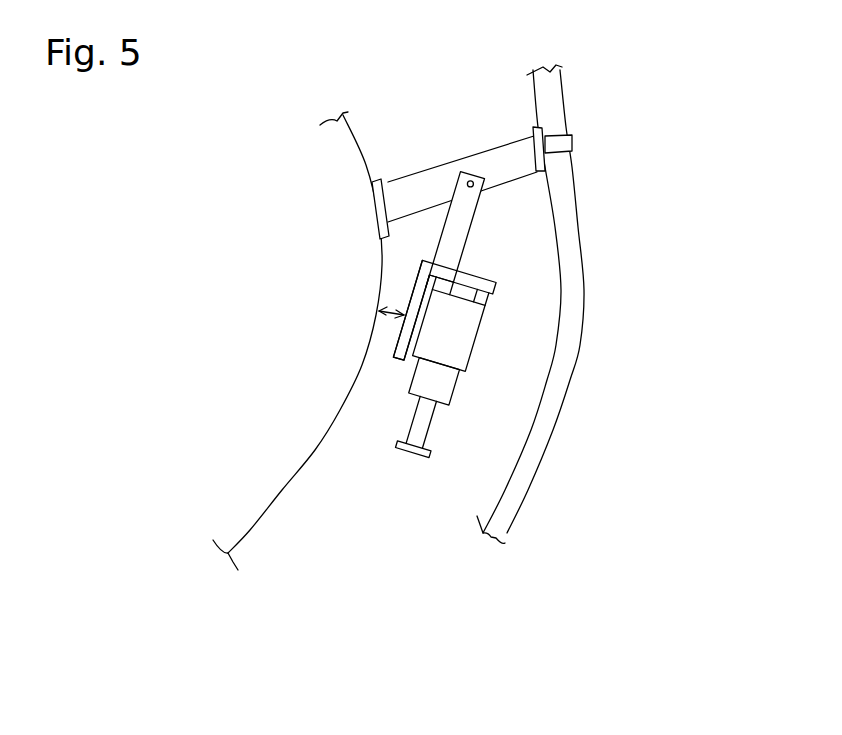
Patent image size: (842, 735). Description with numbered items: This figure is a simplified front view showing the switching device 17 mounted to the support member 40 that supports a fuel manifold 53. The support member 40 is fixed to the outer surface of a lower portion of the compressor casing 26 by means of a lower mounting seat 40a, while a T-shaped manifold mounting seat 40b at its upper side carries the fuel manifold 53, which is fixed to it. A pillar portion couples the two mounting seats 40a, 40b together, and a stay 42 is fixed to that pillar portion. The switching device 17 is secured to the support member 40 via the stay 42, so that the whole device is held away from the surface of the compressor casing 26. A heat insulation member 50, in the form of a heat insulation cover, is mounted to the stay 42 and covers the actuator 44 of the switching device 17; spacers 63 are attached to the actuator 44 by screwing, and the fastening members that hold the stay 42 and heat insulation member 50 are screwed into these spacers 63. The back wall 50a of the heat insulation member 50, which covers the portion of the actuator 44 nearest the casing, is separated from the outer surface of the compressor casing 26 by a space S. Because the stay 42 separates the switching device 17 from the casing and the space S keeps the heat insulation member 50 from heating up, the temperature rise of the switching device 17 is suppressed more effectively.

The switching device 17 is at (400, 400).
The compressor casing 26 is at (310, 305).
The support member 40 is at (503, 173).
The mounting seat 40a is at (372, 197).
The manifold mounting seat 40b is at (534, 138).
The stay 42 is at (460, 240).
The actuator 44 is at (423, 352).
The heat insulation member 50 is at (490, 291).
The back wall 50a is at (397, 343).
The fuel manifold 53 is at (545, 427).
The spacers 63 is at (487, 299).
The space S is at (388, 309).